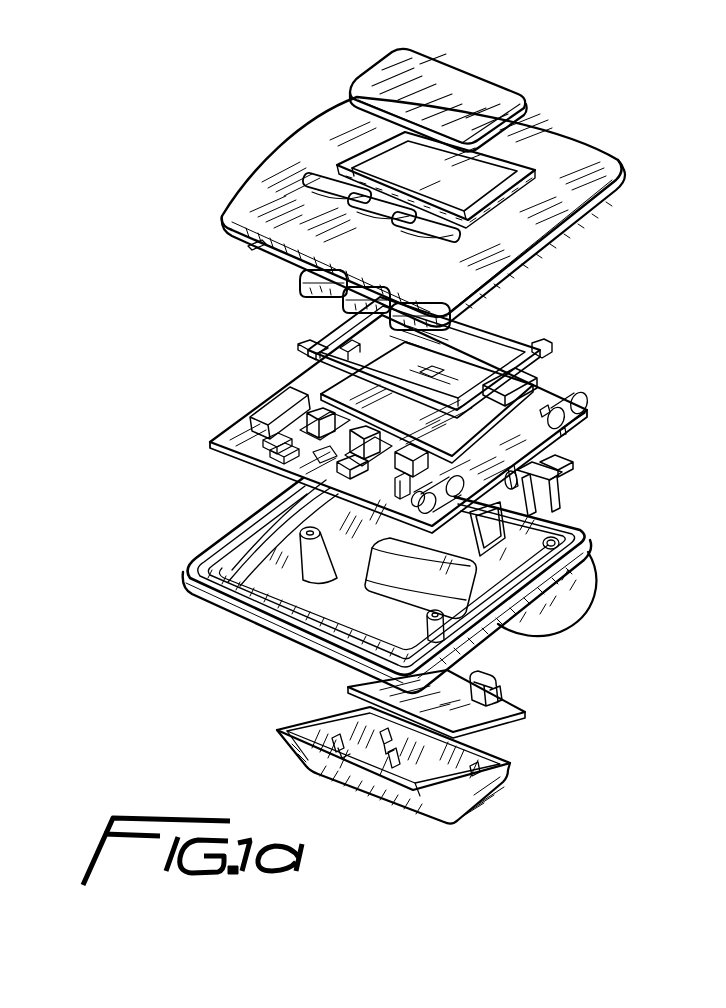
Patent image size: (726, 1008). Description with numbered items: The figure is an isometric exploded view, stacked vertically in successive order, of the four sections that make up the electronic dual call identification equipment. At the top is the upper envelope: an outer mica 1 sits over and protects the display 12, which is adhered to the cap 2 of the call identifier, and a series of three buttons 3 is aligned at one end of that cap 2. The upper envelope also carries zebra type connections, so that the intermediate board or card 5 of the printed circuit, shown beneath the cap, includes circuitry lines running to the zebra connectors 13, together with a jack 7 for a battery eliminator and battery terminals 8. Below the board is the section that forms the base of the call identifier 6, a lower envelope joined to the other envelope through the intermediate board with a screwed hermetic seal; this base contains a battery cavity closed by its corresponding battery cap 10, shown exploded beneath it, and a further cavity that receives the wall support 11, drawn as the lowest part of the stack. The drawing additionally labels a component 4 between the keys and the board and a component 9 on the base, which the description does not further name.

The mica 1 is at (500, 85).
The cap 2 is at (625, 162).
The buttons 3 is at (437, 310).
The display frame 4 is at (547, 350).
The printed circuit board 5 is at (583, 427).
The base of the call identifier 6 is at (597, 537).
The jack for battery eliminator 7 is at (553, 384).
The battery terminals 8 is at (587, 487).
The housing bulge 9 is at (537, 610).
The battery cap 10 is at (520, 727).
The wall support 11 is at (490, 803).
The display 12 is at (407, 167).
The zebra connectors 13 is at (250, 250).